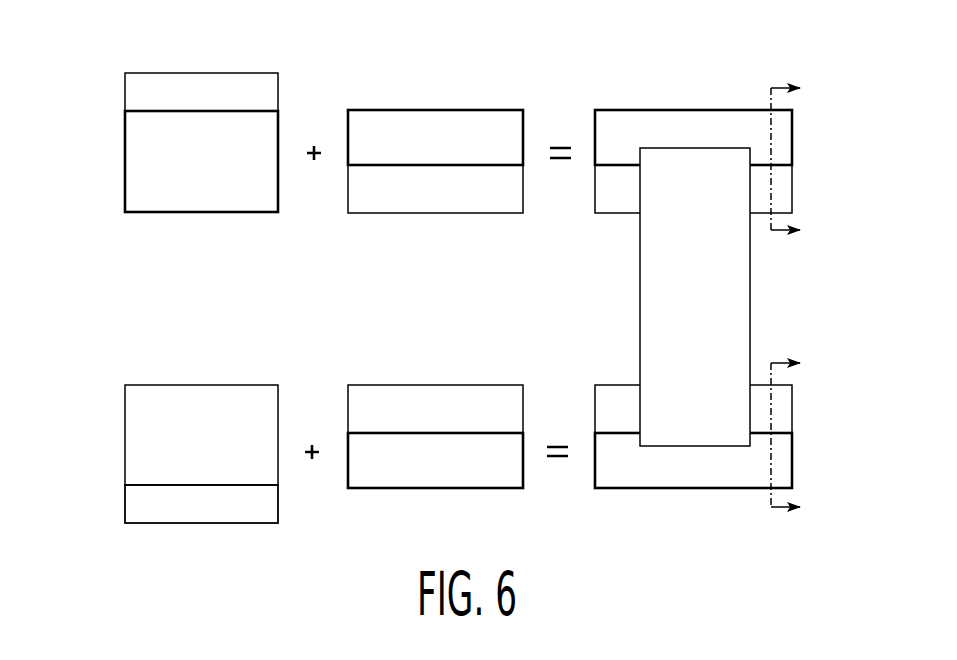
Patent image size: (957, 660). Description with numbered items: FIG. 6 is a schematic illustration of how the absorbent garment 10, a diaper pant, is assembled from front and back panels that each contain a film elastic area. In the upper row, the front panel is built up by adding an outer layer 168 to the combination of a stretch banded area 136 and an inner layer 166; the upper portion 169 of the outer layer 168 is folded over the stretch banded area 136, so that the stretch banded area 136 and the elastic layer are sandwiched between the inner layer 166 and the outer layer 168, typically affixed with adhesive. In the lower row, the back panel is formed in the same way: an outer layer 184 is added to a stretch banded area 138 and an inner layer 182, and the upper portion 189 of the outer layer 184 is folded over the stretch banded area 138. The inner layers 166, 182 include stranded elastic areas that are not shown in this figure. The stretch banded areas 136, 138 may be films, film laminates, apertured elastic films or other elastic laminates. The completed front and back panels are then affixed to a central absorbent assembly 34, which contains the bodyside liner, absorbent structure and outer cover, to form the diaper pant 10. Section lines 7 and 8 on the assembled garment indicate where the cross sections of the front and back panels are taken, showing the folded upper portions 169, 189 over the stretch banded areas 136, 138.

The absorbent garment 10 is at (722, 299).
The central absorbent assembly 34 is at (653, 315).
The upper portion of the outer layer 169 is at (208, 88).
The outer layer 168 is at (210, 200).
The stretch banded area 136 is at (458, 122).
The inner layer 166 is at (465, 205).
The outer layer 184 is at (186, 395).
The upper portion of the outer layer 189 is at (203, 512).
The inner layer 182 is at (423, 393).
The stretch banded area 138 is at (378, 475).
The section line 7- 7 is at (802, 161).
The section line 8- 8 is at (800, 440).